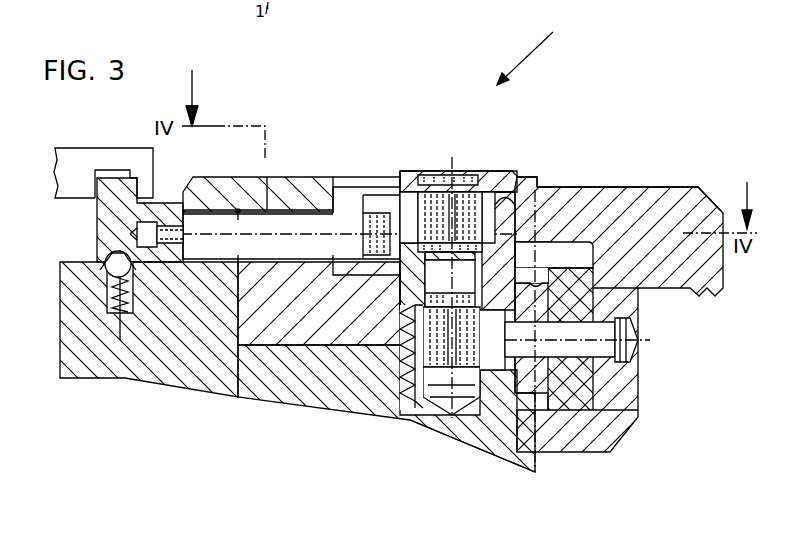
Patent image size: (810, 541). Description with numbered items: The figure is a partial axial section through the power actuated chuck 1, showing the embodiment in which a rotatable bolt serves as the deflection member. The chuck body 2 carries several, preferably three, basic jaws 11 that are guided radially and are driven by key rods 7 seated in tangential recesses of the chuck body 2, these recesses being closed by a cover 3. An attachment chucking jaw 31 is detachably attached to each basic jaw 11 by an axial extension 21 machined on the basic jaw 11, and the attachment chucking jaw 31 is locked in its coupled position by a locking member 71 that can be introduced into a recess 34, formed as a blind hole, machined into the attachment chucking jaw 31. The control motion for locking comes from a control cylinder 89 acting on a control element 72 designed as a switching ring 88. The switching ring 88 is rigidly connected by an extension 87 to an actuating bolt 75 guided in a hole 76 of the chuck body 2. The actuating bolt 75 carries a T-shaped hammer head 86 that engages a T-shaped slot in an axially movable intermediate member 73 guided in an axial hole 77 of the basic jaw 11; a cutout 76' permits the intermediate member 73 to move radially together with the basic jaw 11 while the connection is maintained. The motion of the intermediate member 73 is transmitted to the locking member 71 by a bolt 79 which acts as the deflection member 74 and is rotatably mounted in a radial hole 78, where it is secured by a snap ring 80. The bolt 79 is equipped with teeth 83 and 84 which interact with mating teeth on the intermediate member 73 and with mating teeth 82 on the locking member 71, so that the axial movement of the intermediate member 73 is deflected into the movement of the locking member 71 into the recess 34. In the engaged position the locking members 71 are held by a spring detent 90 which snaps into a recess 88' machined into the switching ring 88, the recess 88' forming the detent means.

The power actuated chuck 1 is at (530, 45).
The chuck body 2 is at (262, 345).
The cover 3 is at (148, 343).
The key rod 7 is at (282, 385).
The basic jaw 11 is at (492, 428).
The axial extension 21 is at (608, 240).
The attachment chucking jaw 31 is at (670, 210).
The recess 34 is at (635, 345).
The locking member 71 is at (590, 348).
The control element 72 is at (170, 198).
The intermediate member 73 is at (412, 203).
The deflection member 74 is at (400, 320).
The actuating bolt 75 is at (300, 218).
The hole 76 is at (291, 336).
The cutout 76' is at (361, 187).
The axial hole 77 is at (522, 200).
The radial hole 78 is at (570, 257).
The bolt 79 is at (440, 383).
The snap ring 80 is at (477, 195).
The mating teeth 82 is at (398, 388).
The teeth 83 is at (489, 200).
The teeth 84 is at (447, 402).
The T-shaped hammer head 86 is at (387, 205).
The extension 87 is at (172, 250).
The switching ring 88 is at (100, 220).
The recess 88' is at (75, 295).
The control cylinder 89 is at (83, 147).
The spring detent 90 is at (105, 253).